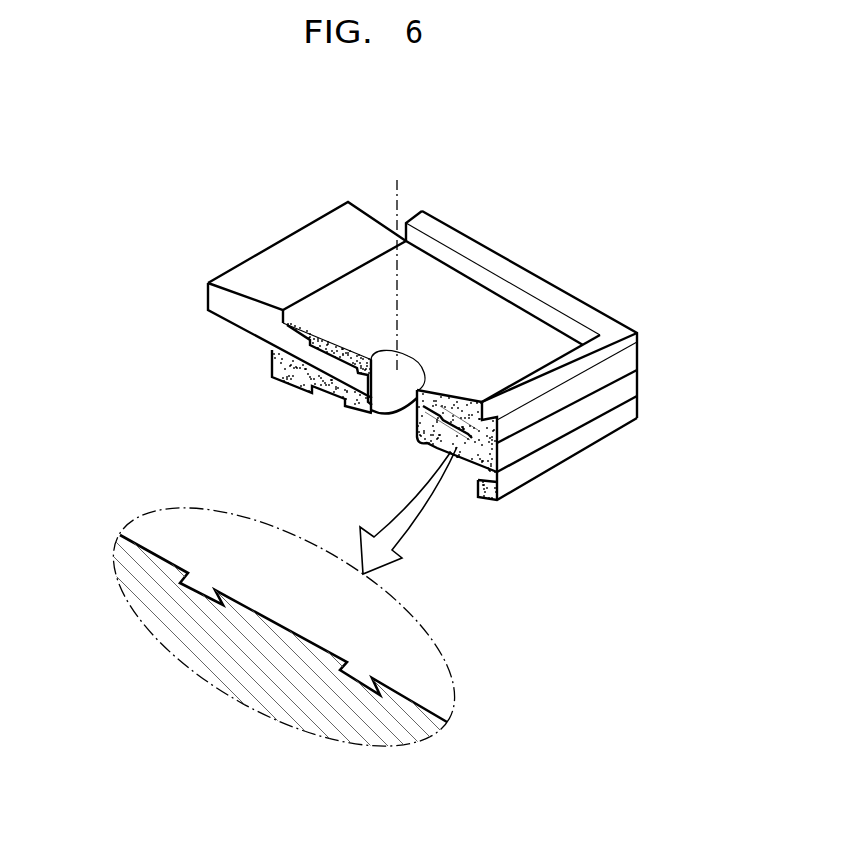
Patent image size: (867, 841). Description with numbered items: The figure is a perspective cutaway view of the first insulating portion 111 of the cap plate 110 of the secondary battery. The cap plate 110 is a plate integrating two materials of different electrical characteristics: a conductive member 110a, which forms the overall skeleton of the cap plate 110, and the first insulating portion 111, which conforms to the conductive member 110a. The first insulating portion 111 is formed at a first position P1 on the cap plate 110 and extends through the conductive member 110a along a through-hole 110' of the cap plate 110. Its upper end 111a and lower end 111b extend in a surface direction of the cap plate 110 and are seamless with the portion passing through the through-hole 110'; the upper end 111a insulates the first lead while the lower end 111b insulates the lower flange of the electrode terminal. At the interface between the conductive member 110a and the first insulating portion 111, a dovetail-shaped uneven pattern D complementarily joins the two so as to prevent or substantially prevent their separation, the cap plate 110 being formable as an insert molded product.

The cap plate 110 is at (380, 432).
The conductive member 110a is at (290, 245).
The through-hole 110' is at (400, 417).
The first insulating portion 111 is at (588, 280).
The upper end of first insulating portion 111a is at (613, 332).
The lower end of first insulating portion 111b is at (532, 468).
The first position P1 is at (395, 262).
The dovetail-shaped uneven pattern D is at (270, 617).